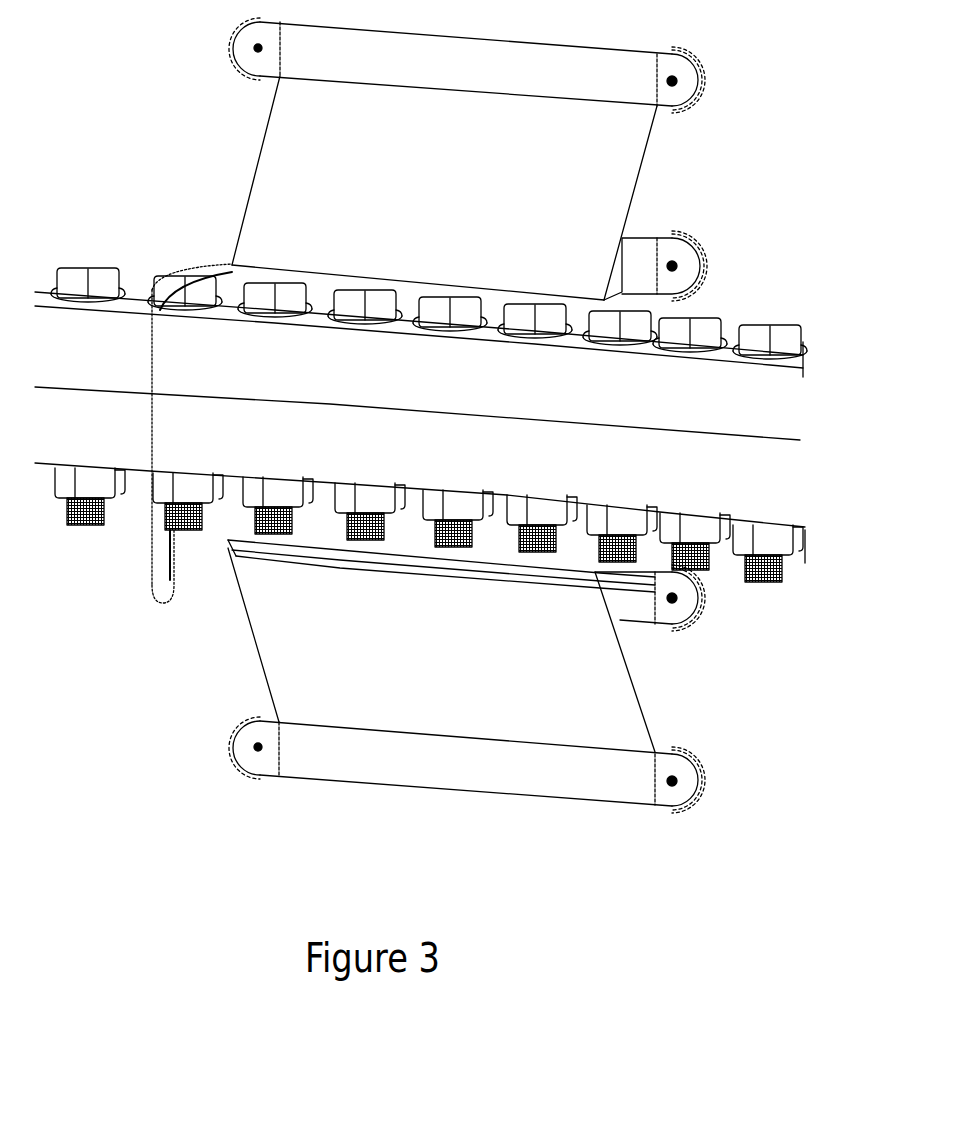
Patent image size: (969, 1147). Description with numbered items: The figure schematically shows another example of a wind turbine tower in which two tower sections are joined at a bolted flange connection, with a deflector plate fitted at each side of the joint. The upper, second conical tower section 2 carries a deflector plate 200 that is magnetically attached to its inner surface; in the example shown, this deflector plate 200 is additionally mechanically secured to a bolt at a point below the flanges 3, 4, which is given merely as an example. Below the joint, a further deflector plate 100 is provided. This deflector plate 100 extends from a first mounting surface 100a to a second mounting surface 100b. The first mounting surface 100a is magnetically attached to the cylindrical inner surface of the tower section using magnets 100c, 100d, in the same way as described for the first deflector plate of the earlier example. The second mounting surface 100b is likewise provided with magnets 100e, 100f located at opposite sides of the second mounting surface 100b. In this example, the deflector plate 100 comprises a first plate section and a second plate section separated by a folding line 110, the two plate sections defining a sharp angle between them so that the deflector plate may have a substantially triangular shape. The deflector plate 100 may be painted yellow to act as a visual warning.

The second conical tower section 2 is at (777, 54).
The deflector plate 200 is at (578, 172).
The flange 4 is at (767, 410).
The flange 3 is at (763, 495).
The deflector plate 100 is at (568, 672).
The folding line 110 is at (417, 613).
The first mounting surface 100a is at (578, 772).
The second mounting surface 100b is at (700, 600).
The magnet 100c is at (672, 788).
The magnet 100d is at (258, 752).
The magnet 100e is at (697, 628).
The magnet 100f is at (186, 455).